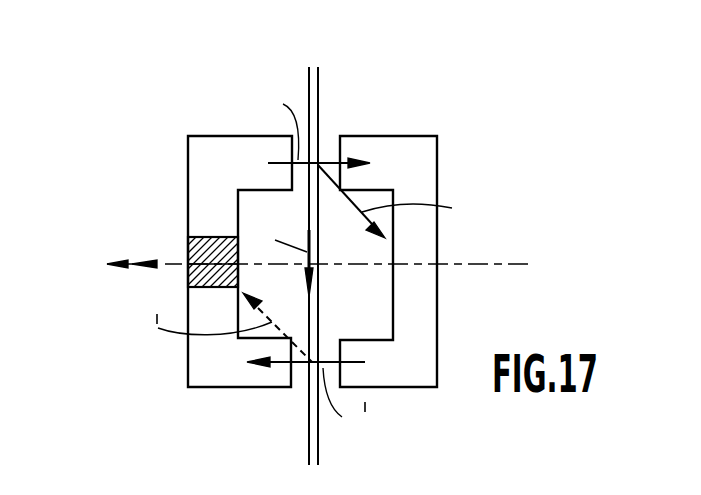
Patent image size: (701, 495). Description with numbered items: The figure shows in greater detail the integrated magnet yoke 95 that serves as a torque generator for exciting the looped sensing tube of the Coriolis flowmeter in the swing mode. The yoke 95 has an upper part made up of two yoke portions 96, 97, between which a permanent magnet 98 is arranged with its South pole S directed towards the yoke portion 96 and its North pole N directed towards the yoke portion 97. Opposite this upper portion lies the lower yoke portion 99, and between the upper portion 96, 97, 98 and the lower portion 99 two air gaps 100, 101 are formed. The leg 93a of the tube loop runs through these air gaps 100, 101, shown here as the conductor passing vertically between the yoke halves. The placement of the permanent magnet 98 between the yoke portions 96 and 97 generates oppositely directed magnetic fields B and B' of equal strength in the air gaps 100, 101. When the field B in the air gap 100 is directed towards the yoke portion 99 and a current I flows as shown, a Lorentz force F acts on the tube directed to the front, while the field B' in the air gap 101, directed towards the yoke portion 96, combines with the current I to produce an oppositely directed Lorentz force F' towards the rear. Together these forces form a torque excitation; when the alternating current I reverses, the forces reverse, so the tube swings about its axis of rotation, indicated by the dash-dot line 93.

The axis 93 is at (478, 264).
The leg of the loop 93a is at (313, 307).
The magnet yoke 95 is at (373, 266).
The yoke portion 96 is at (230, 365).
The yoke portion 97 is at (204, 163).
The permanent magnet 98 is at (197, 250).
The yoke portion 99 is at (388, 150).
The air gap 100 is at (328, 160).
The air gap 101 is at (303, 372).